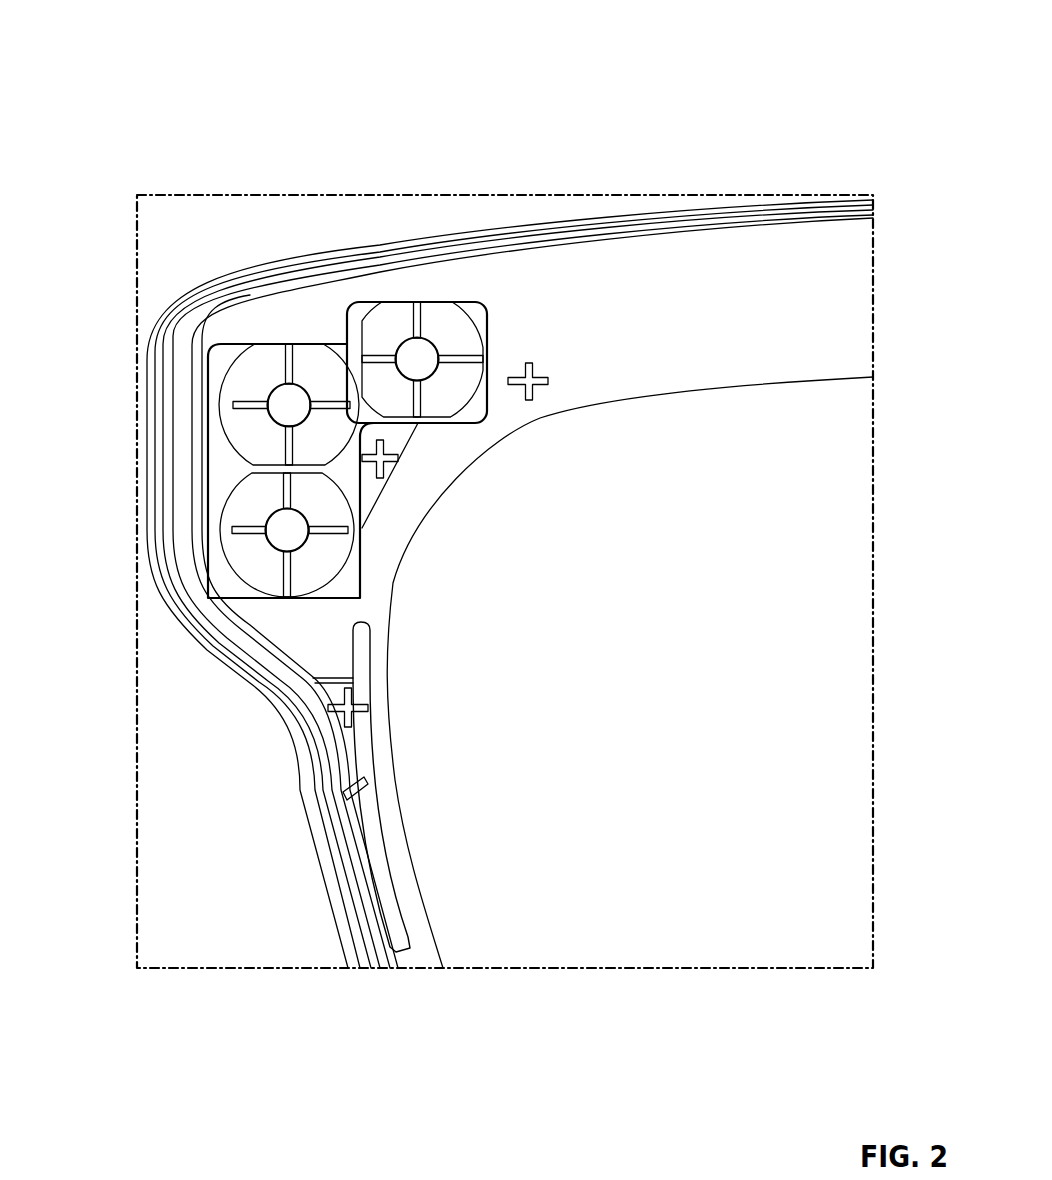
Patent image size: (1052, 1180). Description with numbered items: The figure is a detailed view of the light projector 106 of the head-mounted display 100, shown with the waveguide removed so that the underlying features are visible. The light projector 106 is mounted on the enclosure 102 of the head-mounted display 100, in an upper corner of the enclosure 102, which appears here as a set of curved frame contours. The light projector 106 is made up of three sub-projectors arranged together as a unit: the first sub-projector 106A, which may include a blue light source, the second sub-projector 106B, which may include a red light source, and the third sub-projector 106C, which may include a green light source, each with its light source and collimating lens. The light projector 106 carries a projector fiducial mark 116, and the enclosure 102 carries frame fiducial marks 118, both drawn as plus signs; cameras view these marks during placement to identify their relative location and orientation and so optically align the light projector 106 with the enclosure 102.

The head-mounted display 100 is at (98, 79).
The enclosure 102 is at (552, 223).
The light projector 106 is at (340, 146).
The first sub-projector 106A is at (398, 313).
The second sub-projector 106B is at (302, 355).
The third sub-projector 106C is at (258, 490).
The projector fiducial mark 116 is at (398, 458).
The frame fiducial mark 118 is at (530, 400).